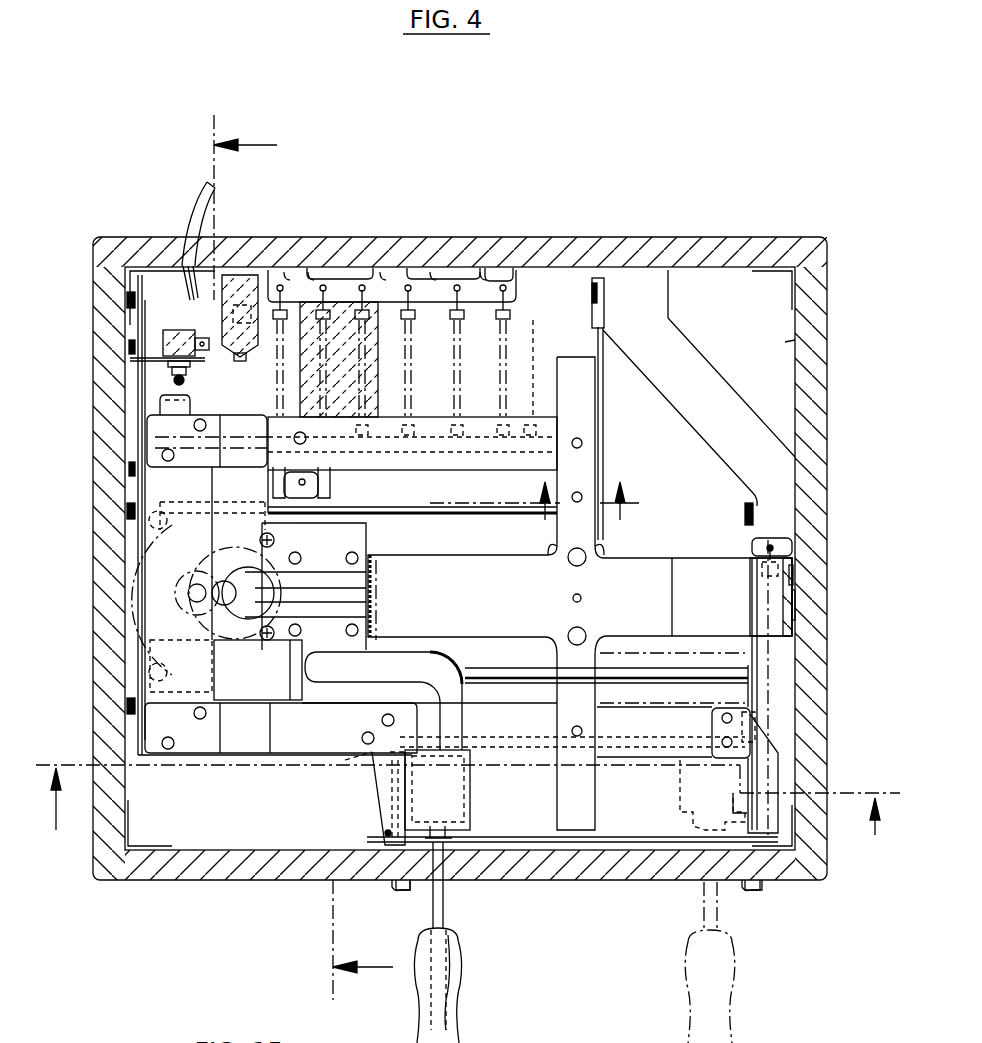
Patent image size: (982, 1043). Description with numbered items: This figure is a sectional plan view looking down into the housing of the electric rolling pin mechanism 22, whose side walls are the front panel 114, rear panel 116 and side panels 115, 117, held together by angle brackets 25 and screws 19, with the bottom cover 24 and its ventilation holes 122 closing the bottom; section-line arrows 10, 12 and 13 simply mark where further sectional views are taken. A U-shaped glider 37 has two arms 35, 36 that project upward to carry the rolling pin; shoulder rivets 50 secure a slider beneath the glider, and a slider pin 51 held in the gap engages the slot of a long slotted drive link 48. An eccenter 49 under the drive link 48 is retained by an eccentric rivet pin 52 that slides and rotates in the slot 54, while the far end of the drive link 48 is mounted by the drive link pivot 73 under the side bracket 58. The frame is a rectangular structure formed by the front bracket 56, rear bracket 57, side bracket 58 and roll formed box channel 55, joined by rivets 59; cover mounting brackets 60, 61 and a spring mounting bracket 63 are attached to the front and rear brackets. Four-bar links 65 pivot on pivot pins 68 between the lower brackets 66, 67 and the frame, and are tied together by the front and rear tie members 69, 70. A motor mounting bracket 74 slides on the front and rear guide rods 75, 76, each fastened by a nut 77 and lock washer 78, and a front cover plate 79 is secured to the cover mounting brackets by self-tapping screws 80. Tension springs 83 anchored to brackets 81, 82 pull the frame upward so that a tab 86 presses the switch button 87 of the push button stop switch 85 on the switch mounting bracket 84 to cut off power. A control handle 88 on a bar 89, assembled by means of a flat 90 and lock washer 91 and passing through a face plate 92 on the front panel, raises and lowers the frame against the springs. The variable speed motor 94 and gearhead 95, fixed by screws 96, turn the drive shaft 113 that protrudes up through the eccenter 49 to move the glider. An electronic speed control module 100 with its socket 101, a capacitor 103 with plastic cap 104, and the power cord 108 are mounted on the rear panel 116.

The section line 10 is at (461, 812).
The section line 12 is at (305, 557).
The section line 13 is at (543, 496).
The screws 19 is at (310, 272).
The electric rolling pin mechanism 22 is at (232, 772).
The bottom cover 24 is at (785, 342).
The angle brackets 25 is at (150, 270).
The arm 35 is at (374, 562).
The arm 36 is at (760, 612).
The glider 37 is at (655, 565).
The drive link 48 is at (312, 585).
The eccenter 49 is at (235, 586).
The shoulder rivets 50 is at (566, 562).
The slider pin 51 is at (583, 598).
The rivet pin 52 is at (222, 605).
The slot 54 is at (328, 580).
The box channel 55 is at (562, 378).
The front bracket 56 is at (285, 748).
The rear bracket 57 is at (480, 425).
The side bracket 58 is at (140, 660).
The rivets 59 is at (175, 452).
The cover mounting bracket 60 is at (372, 808).
The cover mounting bracket 61 is at (750, 775).
The spring mounting bracket 63 is at (330, 491).
The four-bar links 65 is at (145, 355).
The lower bracket 66 is at (722, 400).
The lower bracket 67 is at (147, 432).
The pivot pins 68 is at (126, 300).
The front tie member 69 is at (470, 670).
The rear tie member 70 is at (533, 418).
The drive link pivot 73 is at (196, 584).
The motor mounting bracket 74 is at (408, 660).
The front guide rod 75 is at (572, 749).
The rear guide rod 76 is at (412, 512).
The nut 77 is at (359, 775).
The lock washer 78 is at (383, 798).
The front cover plate 79 is at (522, 834).
The self-tapping screws 80 is at (390, 886).
The bracket 81 is at (505, 272).
The bracket 82 is at (790, 548).
The tension springs 83 is at (362, 322).
The switch mounting bracket 84 is at (163, 362).
The push button stop switch 85 is at (186, 338).
The tab 86 is at (188, 402).
The switch button 87 is at (186, 374).
The control handle 88 is at (460, 992).
The bar 89 is at (447, 900).
The flat 90 is at (447, 928).
The lock washer 91 is at (462, 825).
The face plate 92 is at (555, 865).
The variable speed motor 94 is at (258, 671).
The gearhead 95 is at (175, 672).
The screws 96 is at (275, 540).
The electronic speed control module 100 is at (318, 300).
The socket 101 is at (352, 270).
The capacitor 103 is at (238, 272).
The plastic cap 104 is at (241, 362).
The power cord 108 is at (203, 195).
The drive shaft 113 is at (240, 615).
The front panel 114 is at (244, 870).
The side panel 115 is at (812, 462).
The rear panel 116 is at (580, 255).
The side panel 117 is at (100, 546).
The ventilation holes 122 is at (376, 638).